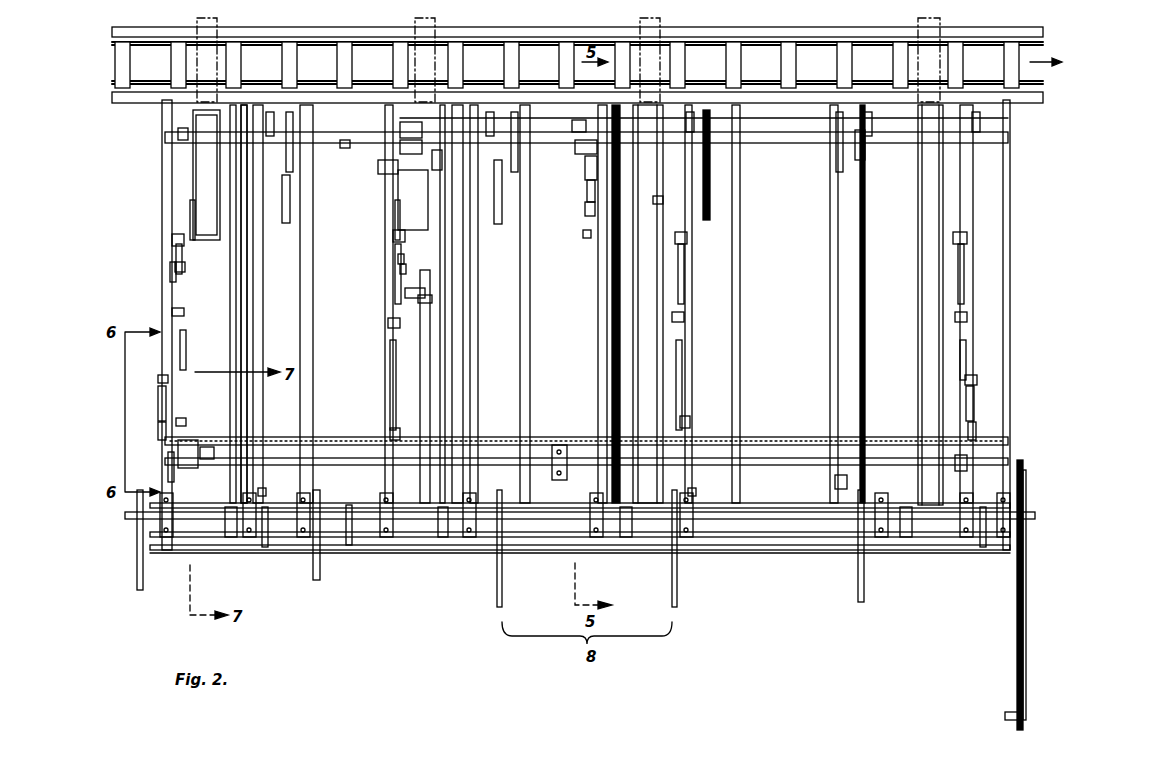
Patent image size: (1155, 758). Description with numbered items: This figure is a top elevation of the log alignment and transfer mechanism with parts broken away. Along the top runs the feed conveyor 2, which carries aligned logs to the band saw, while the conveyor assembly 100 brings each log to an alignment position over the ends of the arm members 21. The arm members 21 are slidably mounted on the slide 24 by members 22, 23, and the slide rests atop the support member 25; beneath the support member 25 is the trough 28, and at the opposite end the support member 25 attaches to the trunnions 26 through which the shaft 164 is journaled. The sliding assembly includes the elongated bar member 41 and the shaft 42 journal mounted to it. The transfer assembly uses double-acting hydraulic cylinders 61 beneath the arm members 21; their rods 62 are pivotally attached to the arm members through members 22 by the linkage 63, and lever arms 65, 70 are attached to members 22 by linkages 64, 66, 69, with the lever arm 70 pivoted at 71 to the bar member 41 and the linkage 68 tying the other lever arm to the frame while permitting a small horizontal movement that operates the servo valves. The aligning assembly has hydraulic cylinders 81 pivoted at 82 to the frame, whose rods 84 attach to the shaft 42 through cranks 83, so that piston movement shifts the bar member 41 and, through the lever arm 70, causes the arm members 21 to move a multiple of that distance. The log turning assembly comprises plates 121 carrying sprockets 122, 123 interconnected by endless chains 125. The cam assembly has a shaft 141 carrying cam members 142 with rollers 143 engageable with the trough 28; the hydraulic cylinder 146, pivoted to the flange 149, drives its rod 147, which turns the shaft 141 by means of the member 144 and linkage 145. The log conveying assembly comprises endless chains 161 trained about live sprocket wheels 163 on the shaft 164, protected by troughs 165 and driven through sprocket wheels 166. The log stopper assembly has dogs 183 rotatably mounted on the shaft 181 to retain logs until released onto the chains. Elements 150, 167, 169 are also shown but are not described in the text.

The conveyor 2 is at (108, 30).
The arm members 21 is at (405, 196).
The members 22 is at (945, 222).
The members 23 is at (1000, 482).
The slide 24 is at (945, 180).
The support member 25 is at (945, 162).
The trunnions 26 is at (920, 540).
The trough 28 is at (440, 158).
The bar member 41 is at (760, 445).
The shaft 42 is at (800, 440).
The hydraulic cylinders 61 is at (420, 320).
The rods 62 is at (405, 292).
The linkage 63 is at (400, 270).
The linkage 64 is at (985, 240).
The lever arm 65 is at (965, 272).
The linkage 66 is at (965, 316).
The linkage 68 is at (175, 268).
The linkage 69 is at (975, 540).
The lever arm 70 is at (965, 351).
The pivot 71 is at (690, 418).
The hydraulic cylinders 81 is at (982, 405).
The pivot 82 is at (985, 382).
The cranks 83 is at (960, 480).
The rods 84 is at (978, 440).
The conveyor assembly 100 is at (196, 455).
The plates 121 is at (840, 112).
The sprockets 122 is at (868, 112).
The sprockets 123 is at (855, 168).
The endless chains 125 is at (860, 225).
The shaft 141 is at (345, 148).
The cam members 142 is at (580, 148).
The rollers 143 is at (380, 172).
The member 144 is at (400, 129).
The linkage 145 is at (580, 122).
The hydraulic cylinder 146 is at (588, 200).
The rod 147 is at (590, 178).
The flange 149 is at (590, 215).
The link 150 is at (585, 236).
The endless chains 161 is at (862, 280).
The live sprocket wheels 163 is at (900, 545).
The shaft 164 is at (352, 540).
The troughs 165 is at (862, 296).
The sprocket wheels 166 is at (1025, 496).
The handle 167 is at (1024, 612).
The arm 169 is at (985, 540).
The shaft 181 is at (375, 550).
The dogs 183 is at (835, 482).